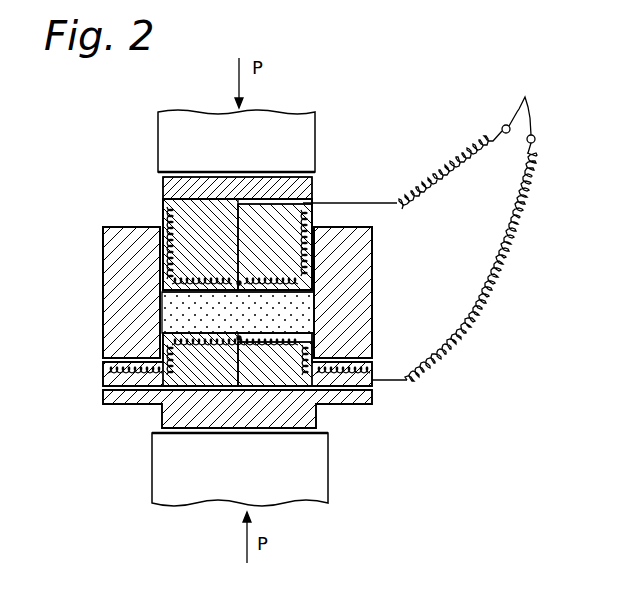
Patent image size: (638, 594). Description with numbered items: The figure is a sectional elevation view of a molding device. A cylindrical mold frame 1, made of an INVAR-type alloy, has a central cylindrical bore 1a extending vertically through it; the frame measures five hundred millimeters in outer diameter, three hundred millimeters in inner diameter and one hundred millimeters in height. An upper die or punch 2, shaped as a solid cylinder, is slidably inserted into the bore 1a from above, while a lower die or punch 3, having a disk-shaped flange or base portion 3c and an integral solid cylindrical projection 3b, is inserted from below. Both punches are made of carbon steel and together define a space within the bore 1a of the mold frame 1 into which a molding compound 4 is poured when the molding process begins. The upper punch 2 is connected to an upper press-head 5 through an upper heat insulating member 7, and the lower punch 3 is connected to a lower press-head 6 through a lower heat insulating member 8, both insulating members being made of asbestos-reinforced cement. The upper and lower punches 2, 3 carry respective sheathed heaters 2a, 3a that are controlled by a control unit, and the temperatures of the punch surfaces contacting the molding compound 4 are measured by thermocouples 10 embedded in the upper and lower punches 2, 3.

The mold frame 1 is at (308, 300).
The central cylindrical bore 1a is at (160, 248).
The upper die or punch 2 is at (187, 222).
The sheathed heater 2a is at (312, 222).
The lower die or punch 3 is at (205, 370).
The sheathed heater 3a is at (130, 368).
The solid cylindrical projection 3b is at (267, 330).
The disk-shaped flange or base portion 3c is at (112, 380).
The molding compound 4 is at (305, 320).
The upper press-head 5 is at (315, 124).
The lower press-head 6 is at (317, 476).
The upper heat insulating member 7 is at (313, 185).
The lower heat insulating member 8 is at (372, 398).
The thermocouples 10 is at (463, 229).